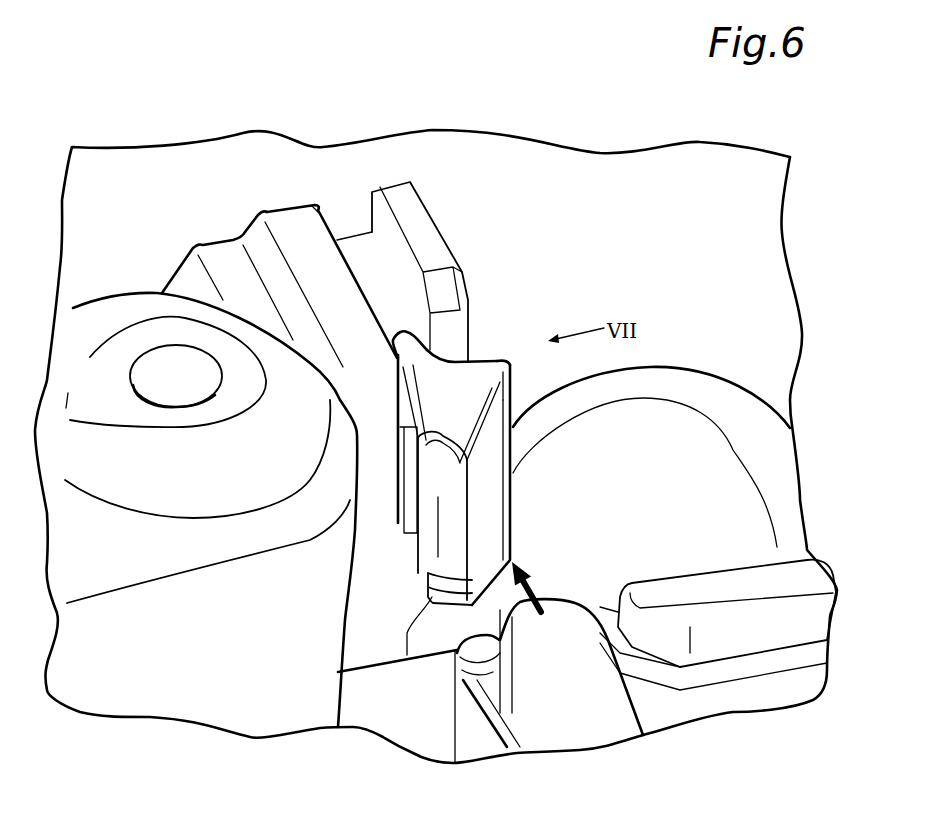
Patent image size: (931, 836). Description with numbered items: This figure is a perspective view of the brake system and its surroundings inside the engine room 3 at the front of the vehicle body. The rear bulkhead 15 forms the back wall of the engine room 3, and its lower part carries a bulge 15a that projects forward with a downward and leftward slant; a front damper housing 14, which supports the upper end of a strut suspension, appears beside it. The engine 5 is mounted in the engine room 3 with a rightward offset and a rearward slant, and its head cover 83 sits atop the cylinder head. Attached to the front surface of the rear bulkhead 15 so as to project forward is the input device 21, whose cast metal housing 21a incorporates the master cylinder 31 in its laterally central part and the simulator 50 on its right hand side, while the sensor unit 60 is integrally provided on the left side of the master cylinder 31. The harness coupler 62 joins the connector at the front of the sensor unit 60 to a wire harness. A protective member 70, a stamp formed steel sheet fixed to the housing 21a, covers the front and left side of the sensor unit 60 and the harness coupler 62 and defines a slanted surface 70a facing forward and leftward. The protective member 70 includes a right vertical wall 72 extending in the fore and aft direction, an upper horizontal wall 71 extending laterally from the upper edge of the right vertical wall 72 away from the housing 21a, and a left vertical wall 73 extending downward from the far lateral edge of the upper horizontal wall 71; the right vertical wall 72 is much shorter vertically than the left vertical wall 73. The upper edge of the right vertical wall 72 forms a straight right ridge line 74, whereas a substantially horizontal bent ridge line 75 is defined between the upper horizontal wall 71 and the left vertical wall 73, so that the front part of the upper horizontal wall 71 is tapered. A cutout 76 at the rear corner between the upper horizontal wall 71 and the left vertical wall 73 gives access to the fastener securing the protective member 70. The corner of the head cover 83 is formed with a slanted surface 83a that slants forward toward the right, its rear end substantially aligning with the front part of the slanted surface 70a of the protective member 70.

The engine room 3 is at (612, 270).
The engine 5 is at (733, 568).
The front damper housing 14 is at (100, 302).
The rear bulkhead 15 is at (376, 165).
The bulge 15a is at (738, 482).
The input device 21 is at (249, 212).
The housing 21a is at (318, 207).
The master cylinder 31 is at (293, 217).
The simulator 50 is at (212, 243).
The sensor unit 60 is at (425, 235).
The harness coupler 62 is at (432, 535).
The protective member 70 is at (517, 357).
The slanted surface 70a is at (497, 522).
The upper horizontal wall 71 is at (478, 373).
The right vertical wall 72 is at (410, 400).
The left vertical wall 73 is at (498, 453).
The right ridge line 74 is at (405, 343).
The bent ridge line 75 is at (503, 378).
The cutout 76 is at (509, 364).
The head cover 83 is at (600, 727).
The slanted surface 83a is at (453, 660).